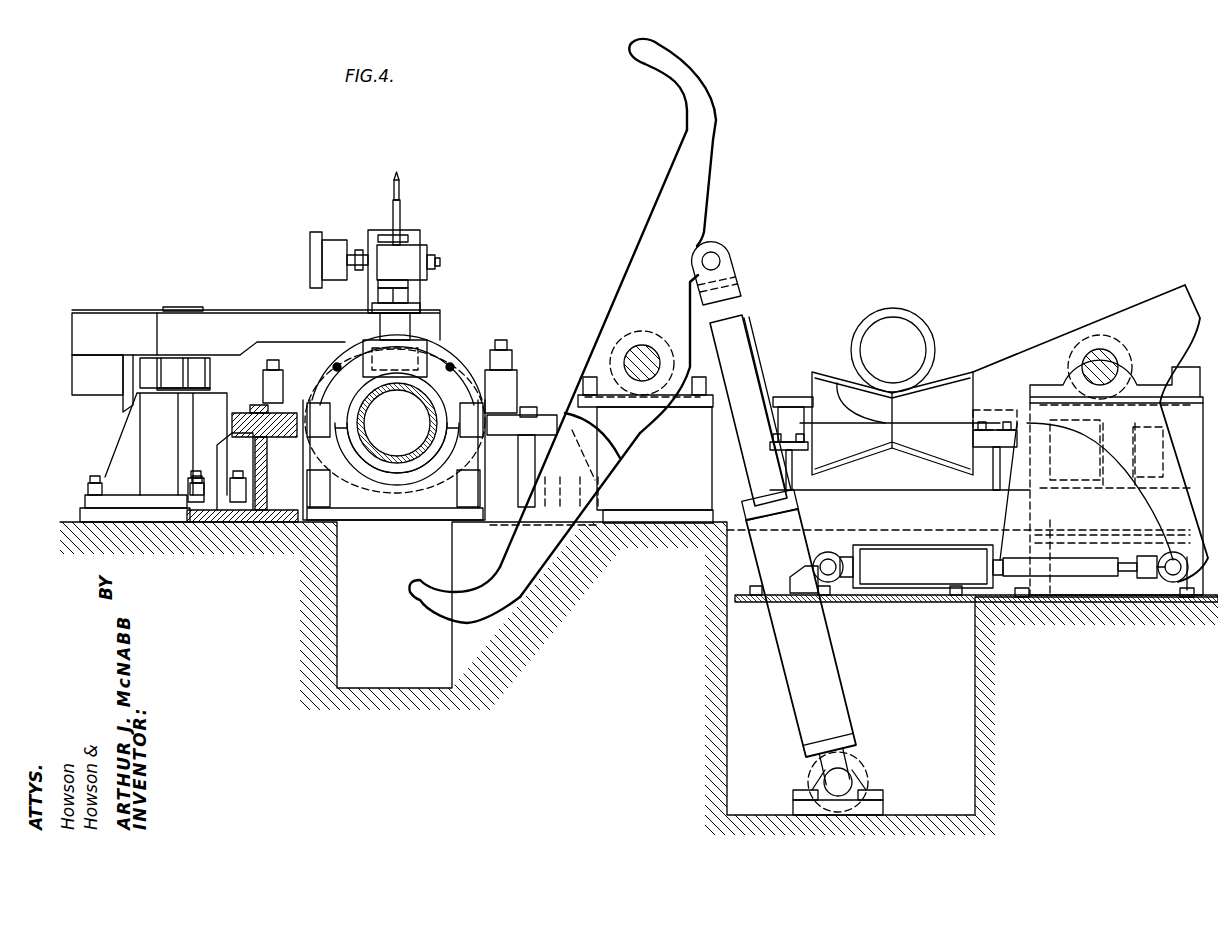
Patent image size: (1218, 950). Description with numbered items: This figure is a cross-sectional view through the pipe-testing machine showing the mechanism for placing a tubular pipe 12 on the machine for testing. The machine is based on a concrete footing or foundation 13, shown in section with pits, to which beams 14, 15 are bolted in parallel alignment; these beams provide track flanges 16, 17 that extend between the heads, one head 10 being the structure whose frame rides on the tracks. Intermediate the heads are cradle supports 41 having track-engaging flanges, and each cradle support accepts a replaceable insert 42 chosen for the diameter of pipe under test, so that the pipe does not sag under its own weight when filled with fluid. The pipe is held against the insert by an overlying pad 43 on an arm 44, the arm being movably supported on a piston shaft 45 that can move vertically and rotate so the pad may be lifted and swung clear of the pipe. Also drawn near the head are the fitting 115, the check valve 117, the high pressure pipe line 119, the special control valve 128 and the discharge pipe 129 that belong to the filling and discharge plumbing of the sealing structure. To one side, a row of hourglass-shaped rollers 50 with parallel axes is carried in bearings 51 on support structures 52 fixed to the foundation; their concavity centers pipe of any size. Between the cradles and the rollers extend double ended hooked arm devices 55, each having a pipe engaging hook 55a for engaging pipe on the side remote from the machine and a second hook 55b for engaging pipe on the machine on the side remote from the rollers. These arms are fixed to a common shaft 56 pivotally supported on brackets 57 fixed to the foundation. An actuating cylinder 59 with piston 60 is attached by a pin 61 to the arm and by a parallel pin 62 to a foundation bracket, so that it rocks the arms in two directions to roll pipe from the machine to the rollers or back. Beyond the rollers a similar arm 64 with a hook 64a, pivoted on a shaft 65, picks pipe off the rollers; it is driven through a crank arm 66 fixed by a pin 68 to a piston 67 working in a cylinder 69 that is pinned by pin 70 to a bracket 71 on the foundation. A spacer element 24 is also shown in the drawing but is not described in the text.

The head 10 is at (450, 330).
The pipe 12 is at (372, 410).
The concrete footing or foundation 13 is at (262, 589).
The beam 14 is at (246, 454).
The beam 15 is at (470, 462).
The track flange 16 is at (155, 443).
The track flange 17 is at (517, 397).
The spacer block 24 is at (252, 408).
The cradle support 41 is at (370, 520).
The insert 42 is at (385, 480).
The pad 43 is at (440, 368).
The arm 44 is at (258, 315).
The piston shaft 45 is at (175, 378).
The roller 50 is at (865, 460).
The bearing 51 is at (785, 425).
The support structure 52 is at (795, 510).
The double ended hooked arm device 55 is at (718, 152).
The pipe engaging hook 55a is at (690, 56).
The pipe engaging hook 55b is at (440, 607).
The common shaft 56 is at (643, 355).
The bracket 57 is at (700, 470).
The actuating cylinder 59 is at (842, 680).
The piston 60 is at (745, 342).
The pin 61 is at (720, 262).
The pin 62 is at (852, 780).
The arm 64 is at (1165, 288).
The hook 64a is at (862, 415).
The shaft 65 is at (1098, 350).
The arm 66 is at (1158, 500).
The piston 67 is at (1090, 565).
The pin 68 is at (1173, 576).
The cylinder 69 is at (935, 578).
The pin 70 is at (836, 578).
The bracket 71 is at (805, 562).
The fitting 115 is at (410, 296).
The check valve 117 is at (372, 233).
The high pressure pipe line 119 is at (400, 188).
The special control valve 128 is at (310, 240).
The discharge pipe 129 is at (402, 212).